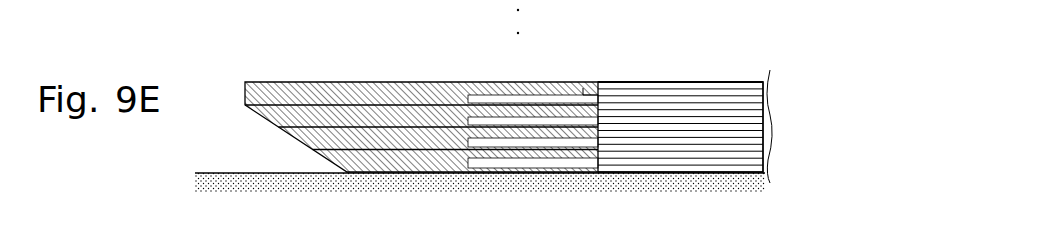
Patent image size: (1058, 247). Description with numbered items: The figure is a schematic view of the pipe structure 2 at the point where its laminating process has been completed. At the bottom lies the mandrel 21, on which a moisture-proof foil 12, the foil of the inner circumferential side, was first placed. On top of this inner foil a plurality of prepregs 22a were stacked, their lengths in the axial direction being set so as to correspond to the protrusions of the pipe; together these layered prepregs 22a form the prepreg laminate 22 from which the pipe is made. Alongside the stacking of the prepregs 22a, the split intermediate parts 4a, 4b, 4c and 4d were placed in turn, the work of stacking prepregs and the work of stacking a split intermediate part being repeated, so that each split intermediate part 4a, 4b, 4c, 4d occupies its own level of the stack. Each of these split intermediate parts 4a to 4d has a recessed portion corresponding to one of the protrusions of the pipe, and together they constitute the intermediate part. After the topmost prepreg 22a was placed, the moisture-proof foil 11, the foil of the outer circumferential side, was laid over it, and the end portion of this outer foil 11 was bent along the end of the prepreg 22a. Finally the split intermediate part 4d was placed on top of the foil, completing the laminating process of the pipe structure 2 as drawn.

The pipe structure 2 is at (262, 79).
The split intermediate part 4a is at (447, 160).
The split intermediate part 4b is at (400, 140).
The split intermediate part 4c is at (343, 120).
The split intermediate part 4d is at (290, 98).
The moisture-proof foil 11 is at (725, 82).
The moisture-proof foil 12 is at (652, 176).
The mandrel 21 is at (231, 188).
The prepreg laminate 22 is at (776, 87).
The prepreg 22a is at (637, 102).